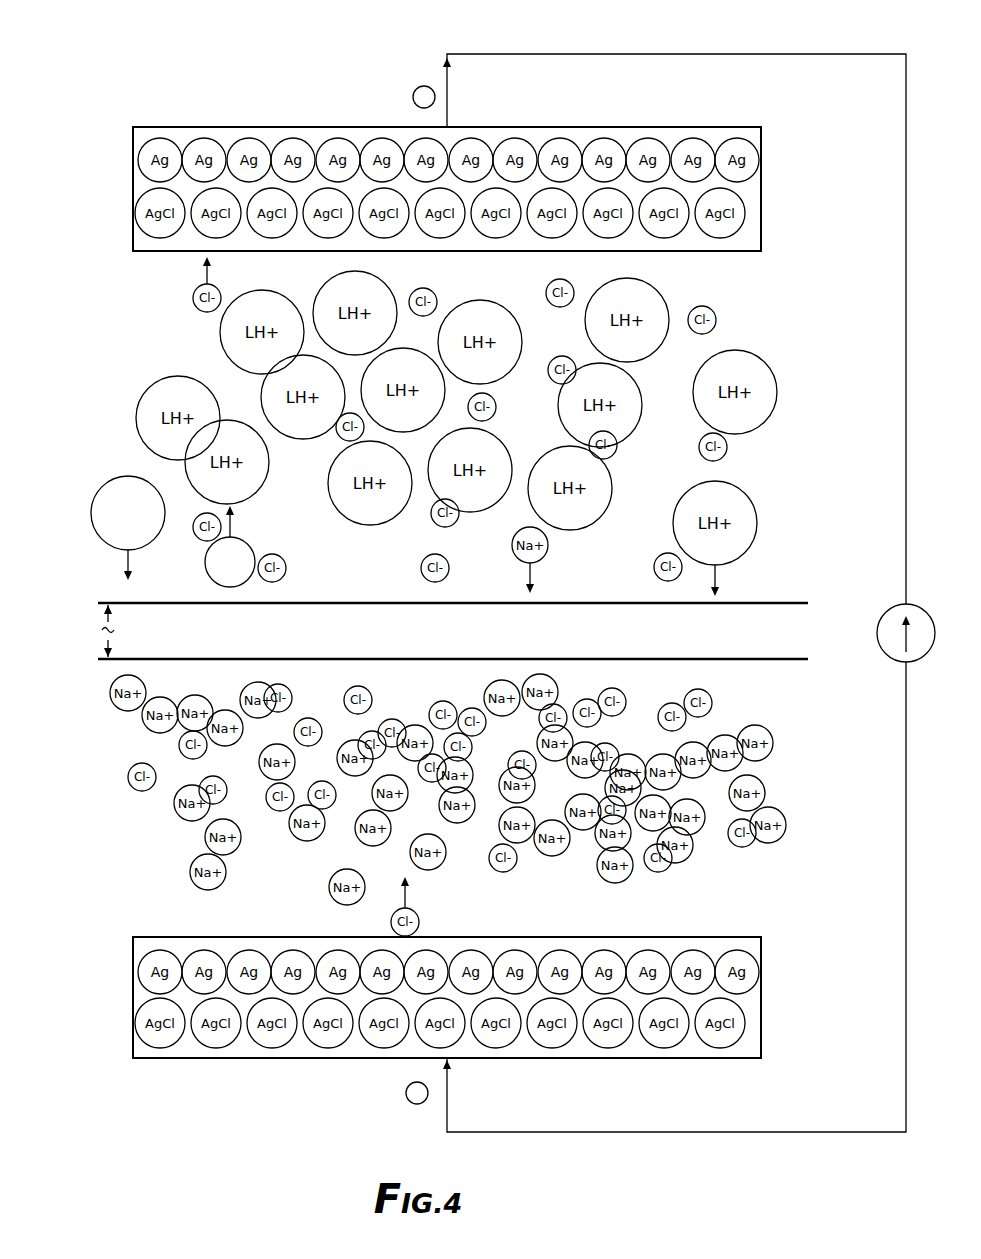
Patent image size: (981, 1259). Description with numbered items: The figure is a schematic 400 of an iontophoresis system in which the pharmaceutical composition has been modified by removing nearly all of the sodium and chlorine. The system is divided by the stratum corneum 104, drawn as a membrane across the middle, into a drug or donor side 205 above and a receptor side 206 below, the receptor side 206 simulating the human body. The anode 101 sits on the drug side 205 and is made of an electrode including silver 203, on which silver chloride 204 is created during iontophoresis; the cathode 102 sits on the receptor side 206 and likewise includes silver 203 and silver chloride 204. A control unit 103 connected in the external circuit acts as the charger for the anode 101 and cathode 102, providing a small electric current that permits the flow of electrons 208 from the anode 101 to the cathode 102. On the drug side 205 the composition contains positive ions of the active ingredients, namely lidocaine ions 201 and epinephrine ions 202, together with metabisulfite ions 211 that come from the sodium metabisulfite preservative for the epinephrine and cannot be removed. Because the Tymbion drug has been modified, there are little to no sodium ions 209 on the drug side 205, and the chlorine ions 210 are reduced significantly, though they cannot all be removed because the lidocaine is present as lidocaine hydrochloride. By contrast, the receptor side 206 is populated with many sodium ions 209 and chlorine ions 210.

The modified pharmaceutical composition schematic 400 is at (150, 62).
The anode 101 is at (762, 180).
The cathode 102 is at (762, 990).
The control unit 103 is at (880, 650).
The stratum corneum 104 is at (95, 628).
The lidocaine ions 201 is at (773, 417).
The epinephrine ions 202 is at (98, 498).
The silver 203 is at (140, 147).
The silver chloride 204 is at (140, 188).
The drug side 205 is at (778, 283).
The receptor side 206 is at (760, 687).
The electrons 208 is at (412, 90).
The sodium ions 209 is at (548, 553).
The chlorine ions 210 is at (421, 568).
The metabisulfite ions 211 is at (210, 580).